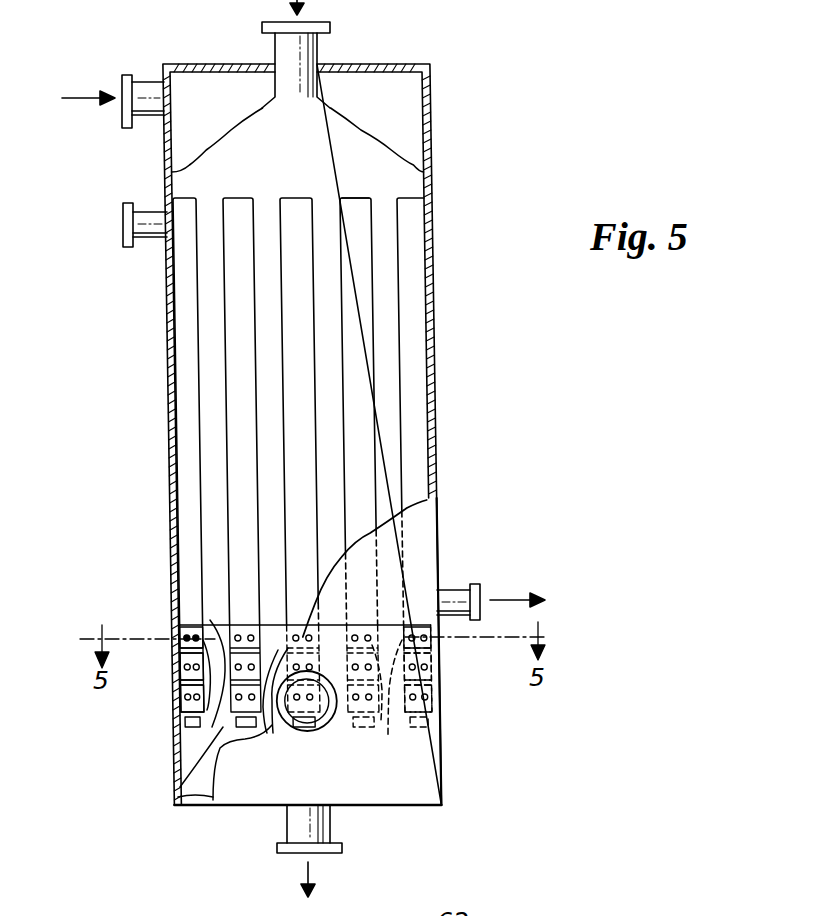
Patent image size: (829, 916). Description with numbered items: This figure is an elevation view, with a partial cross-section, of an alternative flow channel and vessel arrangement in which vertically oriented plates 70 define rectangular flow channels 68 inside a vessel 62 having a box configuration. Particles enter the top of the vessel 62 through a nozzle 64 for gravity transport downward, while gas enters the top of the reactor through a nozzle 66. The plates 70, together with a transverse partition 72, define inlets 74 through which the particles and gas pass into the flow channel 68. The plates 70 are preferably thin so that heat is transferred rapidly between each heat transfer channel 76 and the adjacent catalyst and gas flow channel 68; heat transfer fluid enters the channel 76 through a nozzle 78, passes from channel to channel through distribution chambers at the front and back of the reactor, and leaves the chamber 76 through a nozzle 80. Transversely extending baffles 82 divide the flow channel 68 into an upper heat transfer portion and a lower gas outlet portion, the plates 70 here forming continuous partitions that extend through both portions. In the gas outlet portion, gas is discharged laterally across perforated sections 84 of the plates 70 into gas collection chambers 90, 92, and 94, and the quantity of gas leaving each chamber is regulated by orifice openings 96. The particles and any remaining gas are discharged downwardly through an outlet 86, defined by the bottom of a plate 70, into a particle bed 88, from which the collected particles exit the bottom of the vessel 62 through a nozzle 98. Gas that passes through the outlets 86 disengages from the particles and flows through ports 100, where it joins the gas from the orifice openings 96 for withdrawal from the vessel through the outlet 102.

The vessel 62 is at (431, 116).
The nozzle 64 is at (318, 50).
The nozzle 66 is at (158, 43).
The flow channel 68 is at (385, 233).
The plates 70 is at (400, 285).
The transverse partition 72 is at (410, 190).
The inlets 74 is at (362, 198).
The heat transfer channel 76 is at (190, 352).
The nozzle 78 is at (143, 240).
The nozzle 80 is at (458, 590).
The transversely extending baffles 82 is at (252, 623).
The perforated sections 84 is at (200, 740).
The outlet 86 is at (190, 772).
The particle bed 88 is at (190, 780).
The gas collection chamber 90 is at (185, 647).
The gas collection chamber 92 is at (182, 658).
The gas collection chamber 94 is at (185, 705).
The orifice openings 96 is at (210, 620).
The nozzle 98 is at (331, 828).
The ports 100 is at (240, 722).
The outlet 102 is at (308, 731).